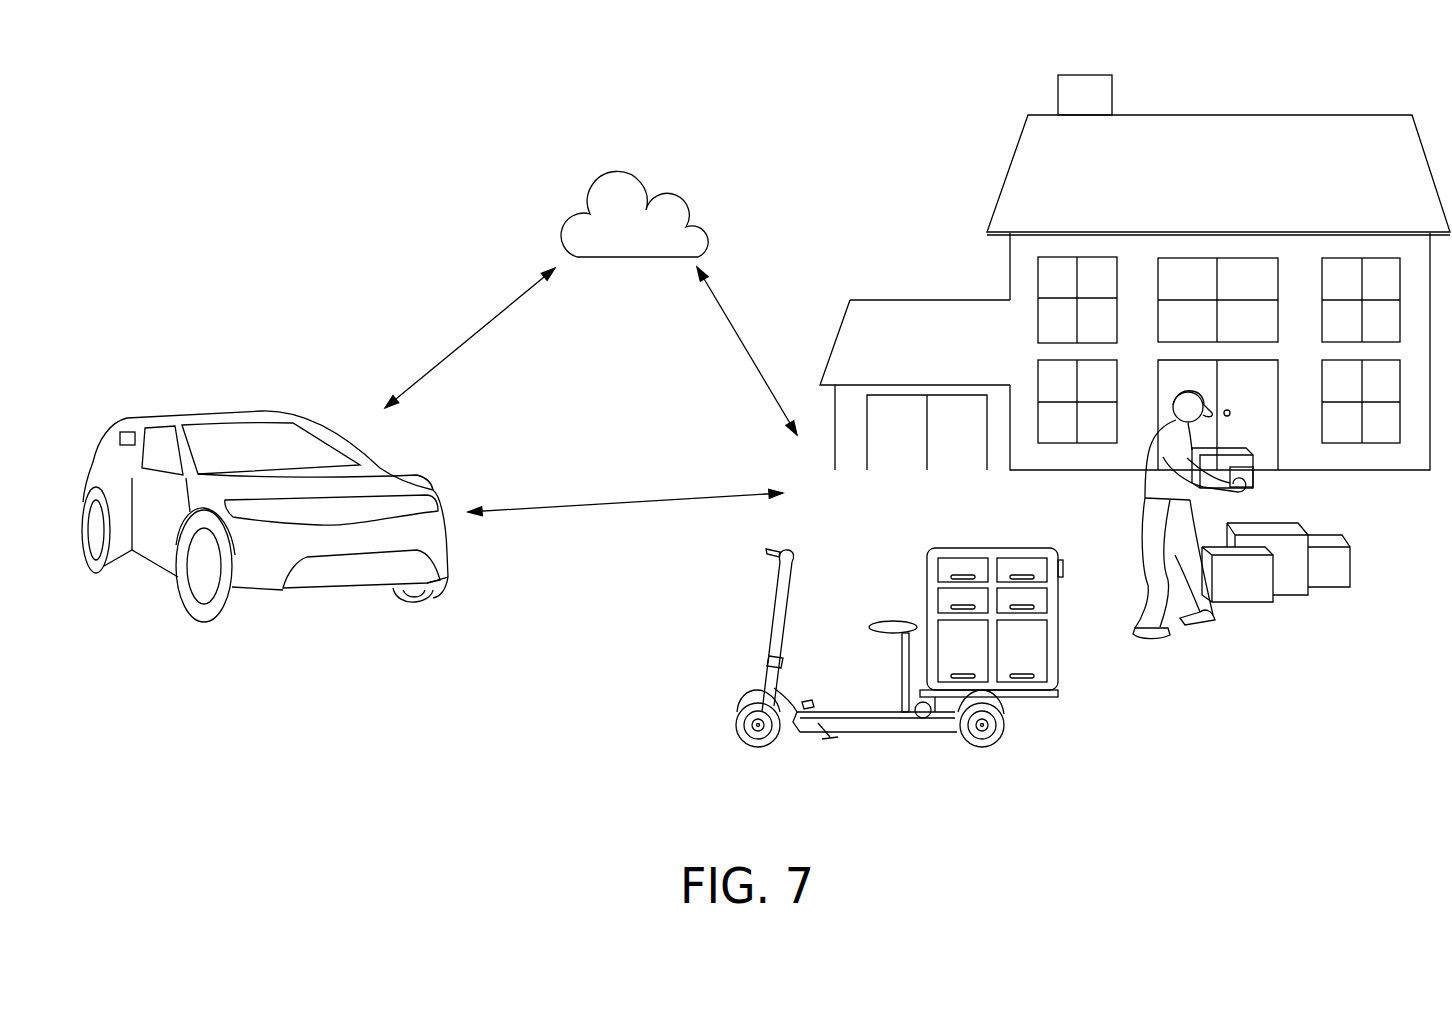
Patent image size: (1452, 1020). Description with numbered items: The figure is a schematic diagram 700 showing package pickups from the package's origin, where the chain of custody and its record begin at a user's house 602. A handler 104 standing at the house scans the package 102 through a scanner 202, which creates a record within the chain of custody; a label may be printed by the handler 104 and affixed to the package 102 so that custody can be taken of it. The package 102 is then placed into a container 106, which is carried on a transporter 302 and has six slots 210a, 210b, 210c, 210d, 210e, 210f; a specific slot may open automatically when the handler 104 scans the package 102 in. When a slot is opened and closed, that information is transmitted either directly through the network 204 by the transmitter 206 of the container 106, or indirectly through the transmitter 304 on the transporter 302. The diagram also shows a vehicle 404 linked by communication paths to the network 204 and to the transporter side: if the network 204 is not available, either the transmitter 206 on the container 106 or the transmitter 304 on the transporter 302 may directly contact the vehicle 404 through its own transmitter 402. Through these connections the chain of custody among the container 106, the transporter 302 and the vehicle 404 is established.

The schematic diagram 700 is at (276, 133).
The transmitter 402 is at (128, 431).
The vehicle 404 is at (265, 490).
The network 204 is at (705, 237).
The user's house 602 is at (1235, 128).
The handler 104 is at (1142, 485).
The scanner 202 is at (1255, 481).
The package 102 is at (1347, 565).
The container 106 is at (989, 615).
The slot 210a is at (968, 565).
The slot 210b is at (1023, 565).
The slot 210c is at (943, 597).
The slot 210d is at (1040, 598).
The slot 210e is at (982, 672).
The slot 210f is at (1040, 650).
The transmitter 206 is at (1063, 568).
The transporter 302 is at (780, 603).
The transmitter 304 is at (923, 720).